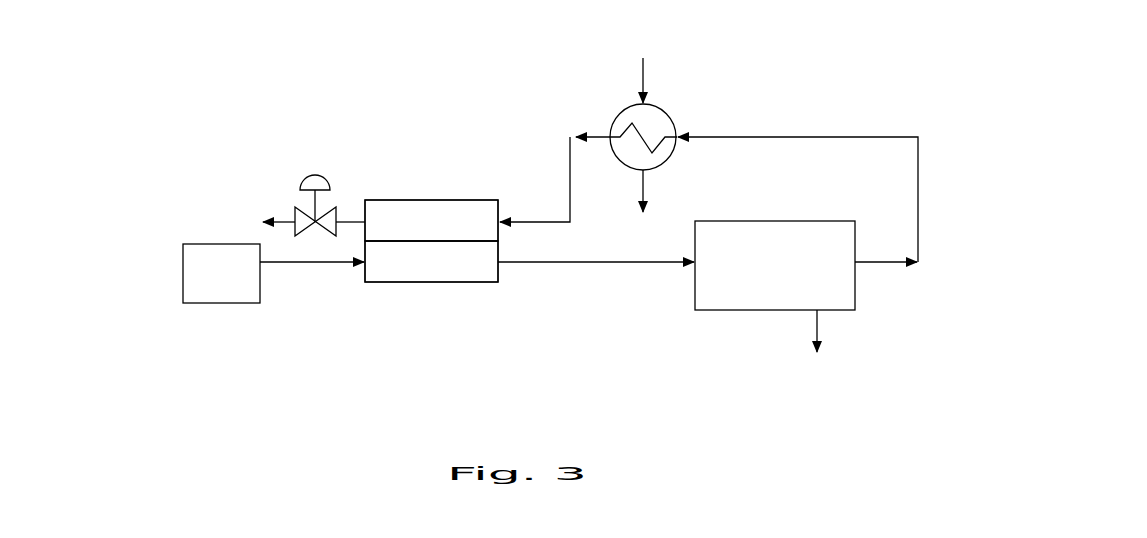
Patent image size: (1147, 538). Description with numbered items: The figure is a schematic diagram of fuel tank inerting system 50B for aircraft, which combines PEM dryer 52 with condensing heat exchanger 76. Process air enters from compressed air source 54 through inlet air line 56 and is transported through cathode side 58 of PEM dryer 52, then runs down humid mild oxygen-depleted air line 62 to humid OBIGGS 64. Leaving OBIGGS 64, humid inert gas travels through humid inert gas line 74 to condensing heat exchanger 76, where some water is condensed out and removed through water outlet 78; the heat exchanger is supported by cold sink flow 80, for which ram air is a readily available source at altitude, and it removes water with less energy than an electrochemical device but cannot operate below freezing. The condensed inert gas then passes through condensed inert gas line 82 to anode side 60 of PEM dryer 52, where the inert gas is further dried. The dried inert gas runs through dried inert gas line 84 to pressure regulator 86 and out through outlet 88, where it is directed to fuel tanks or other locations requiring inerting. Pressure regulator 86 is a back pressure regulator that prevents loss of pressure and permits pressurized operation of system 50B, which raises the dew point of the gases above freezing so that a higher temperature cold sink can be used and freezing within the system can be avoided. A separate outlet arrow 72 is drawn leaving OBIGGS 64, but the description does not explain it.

The fuel tank inerting system 50B is at (977, 133).
The PEM dryer 52 is at (433, 182).
The compressed air source 54 is at (208, 285).
The inlet air line 56 is at (312, 264).
The PEM dryer cathode side 58 is at (423, 272).
The PEM dryer anode side 60 is at (423, 228).
The humid mild ODA line 62 is at (552, 268).
The humid OBIGGS 64 is at (760, 267).
The outlet 72 is at (820, 323).
The humid inert gas line 74 is at (918, 190).
The condensing heat exchanger 76 is at (674, 94).
The water outlet 78 is at (684, 172).
The cold sink flow 80 is at (643, 122).
The condensed inert gas line 82 is at (568, 160).
The dried inert gas line 84 is at (352, 220).
The pressure regulator 86 is at (308, 162).
The outlet 88 is at (278, 218).